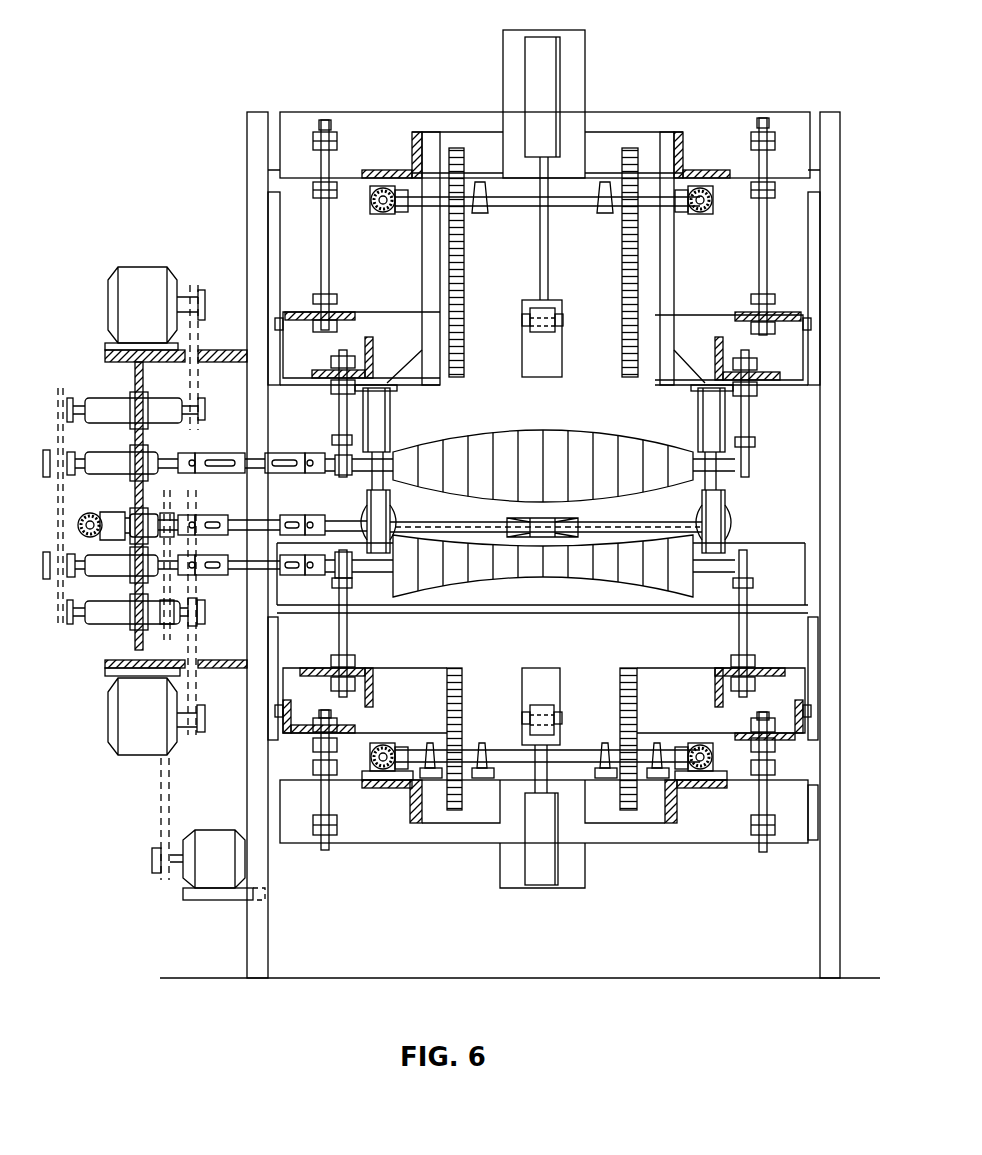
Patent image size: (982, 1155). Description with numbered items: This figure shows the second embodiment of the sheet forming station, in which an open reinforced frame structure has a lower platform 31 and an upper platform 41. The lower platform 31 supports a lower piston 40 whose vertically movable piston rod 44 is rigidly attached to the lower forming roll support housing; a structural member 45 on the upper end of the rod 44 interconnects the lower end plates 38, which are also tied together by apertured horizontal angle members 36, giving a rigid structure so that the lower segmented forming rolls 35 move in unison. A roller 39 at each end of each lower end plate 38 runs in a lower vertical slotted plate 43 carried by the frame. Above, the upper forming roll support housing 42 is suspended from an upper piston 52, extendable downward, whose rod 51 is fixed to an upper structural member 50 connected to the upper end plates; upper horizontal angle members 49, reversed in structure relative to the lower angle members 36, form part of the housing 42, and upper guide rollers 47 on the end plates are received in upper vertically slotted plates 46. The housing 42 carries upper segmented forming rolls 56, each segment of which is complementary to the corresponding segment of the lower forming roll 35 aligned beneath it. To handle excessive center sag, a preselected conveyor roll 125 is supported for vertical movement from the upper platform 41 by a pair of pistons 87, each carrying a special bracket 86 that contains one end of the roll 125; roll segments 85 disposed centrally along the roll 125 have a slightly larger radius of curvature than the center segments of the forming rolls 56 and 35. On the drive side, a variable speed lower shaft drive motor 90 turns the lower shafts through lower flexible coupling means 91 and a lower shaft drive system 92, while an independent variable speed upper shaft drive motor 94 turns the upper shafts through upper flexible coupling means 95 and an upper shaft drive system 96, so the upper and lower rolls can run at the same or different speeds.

The lower platform 31 is at (705, 808).
The lower segmented forming roll 35 is at (585, 580).
The horizontal angle member 36 is at (373, 690).
The lower end plate 38 is at (432, 726).
The roller 39 is at (275, 711).
The lower piston 40 is at (548, 885).
The upper platform 41 is at (698, 138).
The upper forming roll support housing 42 is at (694, 299).
The lower vertical slotted plate 43 is at (268, 677).
The piston rod 44 is at (548, 770).
The structural member 45 is at (535, 683).
The upper vertically slotted plate 46 is at (274, 230).
The upper guide roller 47 is at (275, 320).
The upper horizontal angle member 49 is at (398, 342).
The upper structural member 50 is at (560, 352).
The rod 51 is at (548, 240).
The upper piston 52 is at (560, 66).
The upper segmented forming roll 56 is at (543, 430).
The roll segment 85 is at (507, 521).
The special bracket 86 is at (367, 508).
The piston 87 is at (393, 412).
The lower shaft drive motor 90 is at (158, 729).
The lower flexible coupling means 91 is at (243, 570).
The lower shaft drive system 92 is at (52, 606).
The upper shaft drive motor 94 is at (158, 320).
The upper flexible coupling means 95 is at (213, 447).
The upper shaft drive system 96 is at (105, 375).
The preselected conveyor roll 125 is at (628, 524).